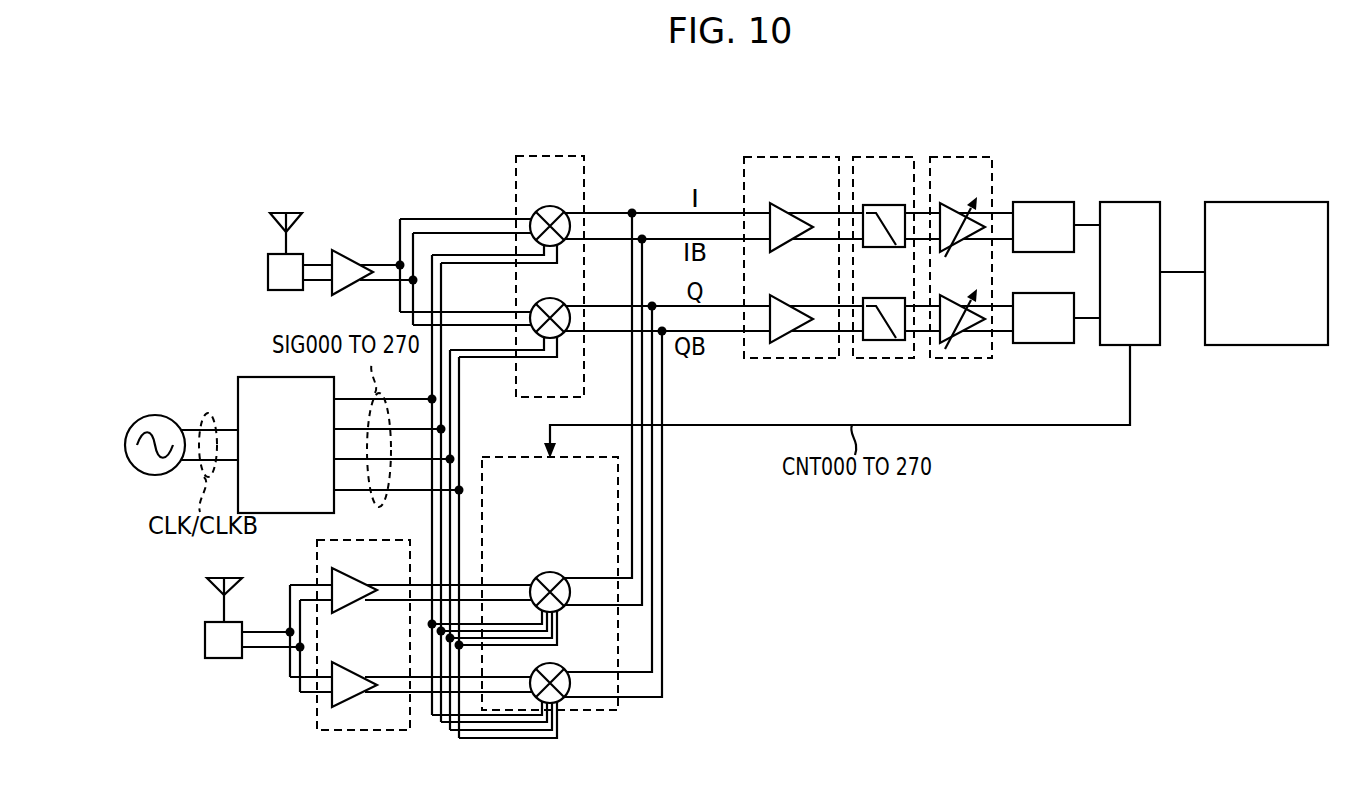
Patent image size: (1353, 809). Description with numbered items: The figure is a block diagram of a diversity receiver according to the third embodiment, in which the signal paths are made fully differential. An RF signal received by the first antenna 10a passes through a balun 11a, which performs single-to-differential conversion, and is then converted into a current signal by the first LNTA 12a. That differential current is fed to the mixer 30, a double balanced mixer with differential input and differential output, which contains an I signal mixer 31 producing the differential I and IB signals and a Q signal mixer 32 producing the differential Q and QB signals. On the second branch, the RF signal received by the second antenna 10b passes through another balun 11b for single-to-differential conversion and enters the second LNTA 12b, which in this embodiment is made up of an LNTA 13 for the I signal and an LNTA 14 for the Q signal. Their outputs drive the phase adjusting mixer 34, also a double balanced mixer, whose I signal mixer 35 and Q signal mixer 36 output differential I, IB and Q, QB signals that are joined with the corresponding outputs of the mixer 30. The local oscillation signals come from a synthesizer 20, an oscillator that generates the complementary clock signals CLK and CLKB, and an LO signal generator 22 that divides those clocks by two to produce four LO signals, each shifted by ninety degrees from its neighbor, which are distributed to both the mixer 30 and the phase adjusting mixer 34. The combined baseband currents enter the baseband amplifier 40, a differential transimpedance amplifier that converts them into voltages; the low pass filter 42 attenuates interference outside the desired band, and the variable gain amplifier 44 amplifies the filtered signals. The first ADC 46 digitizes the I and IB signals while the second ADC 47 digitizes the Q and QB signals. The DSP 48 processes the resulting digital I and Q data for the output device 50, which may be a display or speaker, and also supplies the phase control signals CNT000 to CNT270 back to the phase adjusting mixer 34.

The first antenna 10a is at (270, 218).
The balun 11a is at (268, 270).
The first low-noise transconductance amplifier 12a is at (360, 252).
The mixer 30 is at (545, 156).
The I signal mixer 31 is at (567, 246).
The Q signal mixer 32 is at (567, 338).
The baseband amplifier 40 is at (786, 157).
The low pass filter 42 is at (886, 157).
The variable gain amplifier 44 is at (960, 157).
The first analog-to-digital converter 46 is at (1041, 202).
The second analog-to-digital converter 47 is at (1041, 343).
The digital signal processor 48 is at (1128, 202).
The output device 50 is at (1263, 202).
The synthesizer 20 is at (155, 415).
The local oscillation signal generator 22 is at (238, 380).
The phase adjusting mixer 34 is at (509, 457).
The I signal mixer 35 is at (567, 578).
The Q signal mixer 36 is at (567, 670).
The second antenna 10b is at (207, 588).
The balun 11b is at (205, 640).
The second low-noise transconductance amplifier 12b is at (358, 731).
The LNTA for the I signal 13 is at (363, 600).
The LNTA for the Q signal 14 is at (363, 695).